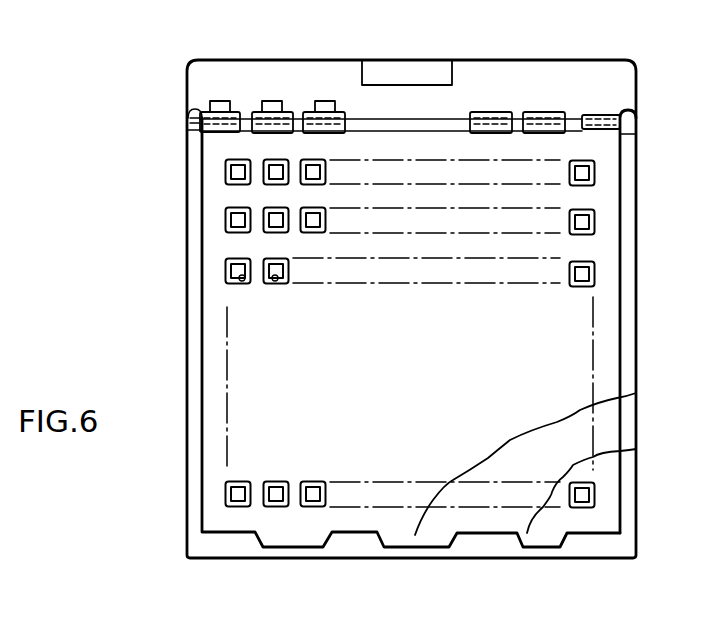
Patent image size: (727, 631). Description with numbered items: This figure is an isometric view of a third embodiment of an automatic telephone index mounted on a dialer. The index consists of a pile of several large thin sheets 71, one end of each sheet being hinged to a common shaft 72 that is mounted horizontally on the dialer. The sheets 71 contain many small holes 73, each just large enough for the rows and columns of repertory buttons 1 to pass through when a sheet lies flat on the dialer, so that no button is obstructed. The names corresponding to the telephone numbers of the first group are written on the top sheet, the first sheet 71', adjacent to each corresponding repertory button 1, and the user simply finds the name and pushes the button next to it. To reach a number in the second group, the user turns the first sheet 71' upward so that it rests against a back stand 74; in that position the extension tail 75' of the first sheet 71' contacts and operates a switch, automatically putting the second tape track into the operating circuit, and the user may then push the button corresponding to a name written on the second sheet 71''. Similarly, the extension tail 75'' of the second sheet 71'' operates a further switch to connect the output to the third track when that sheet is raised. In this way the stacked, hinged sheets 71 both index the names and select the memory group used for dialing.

The repertory buttons 1 is at (278, 173).
The large thin sheets 71 is at (404, 358).
The first sheet 71' is at (645, 321).
The second sheet 71'' is at (553, 464).
The common shaft 72 is at (450, 118).
The small holes 73 is at (275, 281).
The back stand 74 is at (427, 70).
The extension tail 75' is at (218, 90).
The extension tail 75'' is at (298, 90).